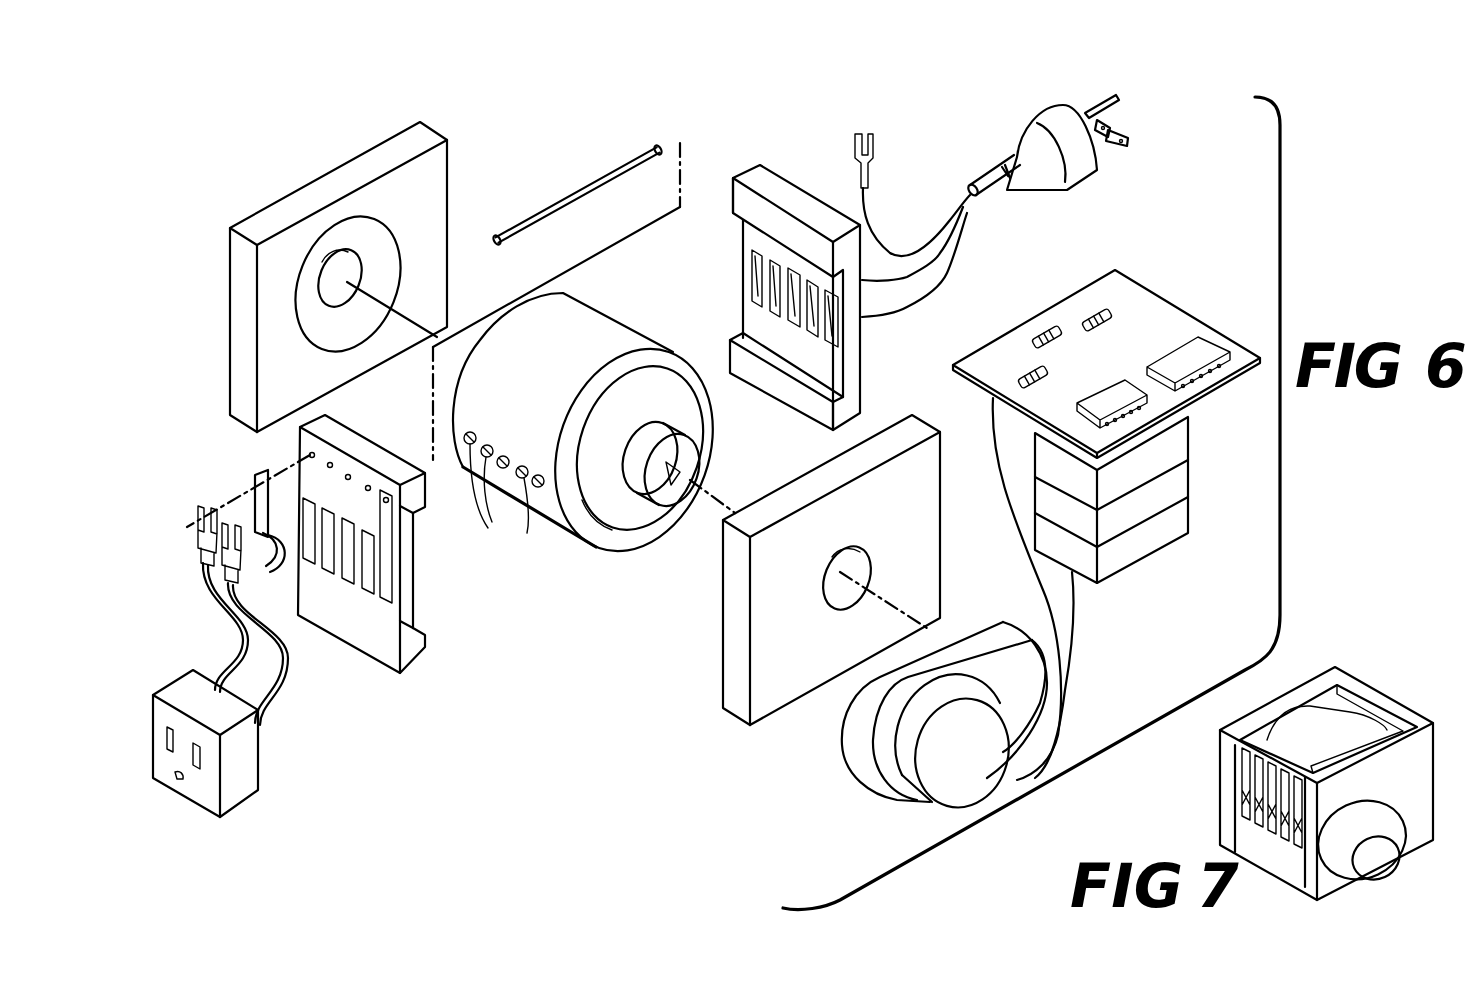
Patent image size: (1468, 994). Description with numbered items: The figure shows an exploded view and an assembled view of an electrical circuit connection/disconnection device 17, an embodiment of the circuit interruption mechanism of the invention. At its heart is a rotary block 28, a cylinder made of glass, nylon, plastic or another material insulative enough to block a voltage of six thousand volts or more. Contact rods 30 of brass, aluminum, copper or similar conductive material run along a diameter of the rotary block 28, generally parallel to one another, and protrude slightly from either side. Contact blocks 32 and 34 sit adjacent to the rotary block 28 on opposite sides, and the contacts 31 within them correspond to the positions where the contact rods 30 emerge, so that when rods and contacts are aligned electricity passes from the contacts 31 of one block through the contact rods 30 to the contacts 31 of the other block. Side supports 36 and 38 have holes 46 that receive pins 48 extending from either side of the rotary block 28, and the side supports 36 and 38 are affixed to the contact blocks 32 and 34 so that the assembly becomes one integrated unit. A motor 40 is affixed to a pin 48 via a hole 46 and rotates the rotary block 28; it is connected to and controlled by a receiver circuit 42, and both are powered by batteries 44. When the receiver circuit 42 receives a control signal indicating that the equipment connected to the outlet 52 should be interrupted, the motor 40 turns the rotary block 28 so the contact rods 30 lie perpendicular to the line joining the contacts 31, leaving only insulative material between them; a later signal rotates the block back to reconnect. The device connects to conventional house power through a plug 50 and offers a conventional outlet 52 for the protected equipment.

In FIG. 6, the electrical circuit connection/disconnection device 17 is at (595, 806).
In FIG. 7, the electrical circuit connection/disconnection device 17 is at (1383, 682).
In FIG. 6, the rotary block 28 is at (604, 305).
In FIG. 6, the contact rods 30 is at (584, 192).
In FIG. 6, the contacts 31 is at (772, 297).
In FIG. 6, the contact block 32 is at (410, 673).
In FIG. 6, the contact block 34 is at (808, 203).
In FIG. 6, the side support 36 is at (822, 478).
In FIG. 6, the side support 38 is at (270, 217).
In FIG. 6, the motor 40 is at (940, 783).
In FIG. 6, the receiver circuit 42 is at (1072, 307).
In FIG. 6, the batteries 44 is at (1170, 540).
In FIG. 6, the holes 46 is at (347, 262).
In FIG. 6, the pins 48 is at (688, 467).
In FIG. 6, the plug 50 is at (1037, 122).
In FIG. 6, the outlet 52 is at (253, 770).